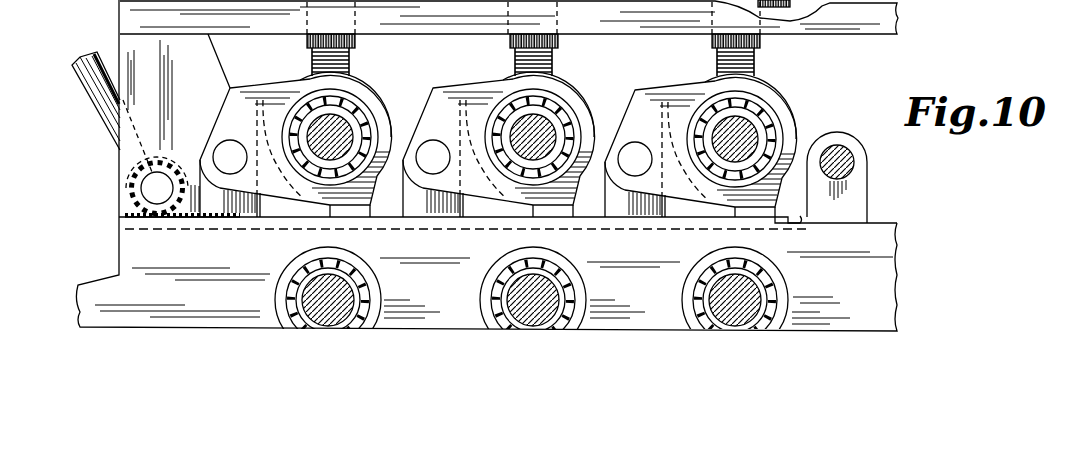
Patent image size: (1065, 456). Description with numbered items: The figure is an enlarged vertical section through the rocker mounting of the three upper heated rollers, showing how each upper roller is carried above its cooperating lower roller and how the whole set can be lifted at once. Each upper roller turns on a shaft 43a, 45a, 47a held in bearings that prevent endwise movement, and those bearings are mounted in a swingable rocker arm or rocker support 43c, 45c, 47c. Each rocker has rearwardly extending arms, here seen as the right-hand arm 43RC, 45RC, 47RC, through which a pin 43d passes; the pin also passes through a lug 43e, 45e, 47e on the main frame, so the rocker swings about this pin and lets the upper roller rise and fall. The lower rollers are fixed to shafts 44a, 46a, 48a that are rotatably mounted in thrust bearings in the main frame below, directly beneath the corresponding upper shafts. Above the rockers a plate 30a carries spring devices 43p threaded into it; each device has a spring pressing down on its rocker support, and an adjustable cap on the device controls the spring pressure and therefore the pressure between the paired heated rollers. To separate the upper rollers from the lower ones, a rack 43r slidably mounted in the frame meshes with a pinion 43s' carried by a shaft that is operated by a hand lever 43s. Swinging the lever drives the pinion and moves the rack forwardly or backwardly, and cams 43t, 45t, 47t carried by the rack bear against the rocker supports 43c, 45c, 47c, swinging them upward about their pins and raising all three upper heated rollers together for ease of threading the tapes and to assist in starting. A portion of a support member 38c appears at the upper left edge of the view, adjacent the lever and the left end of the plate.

The plate 30a is at (582, 26).
The support member 38c is at (80, 2).
The spring device 43p is at (506, 45).
The rearwardly extending arm 43RC is at (276, 68).
The rearwardly extending arm 45RC is at (499, 140).
The rearwardly extending arm 47RC is at (701, 137).
The shaft 43a is at (312, 126).
The shaft 45a is at (493, 132).
The shaft 47a is at (775, 133).
The rocker arm 43c is at (362, 82).
The rocker support 45c is at (553, 96).
The rocker support 47c is at (758, 99).
The pin 43d is at (218, 148).
The lug 43e is at (247, 212).
The lug 45e is at (446, 222).
The lug 47e is at (647, 224).
The cam 43t is at (352, 212).
The cam 45t is at (558, 229).
The cam 47t is at (768, 230).
The hand lever 43s is at (91, 112).
The pinion 43s' is at (128, 185).
The rack 43r is at (207, 220).
The shaft 44a is at (343, 299).
The shaft 46a is at (553, 300).
The shaft 48a is at (748, 299).